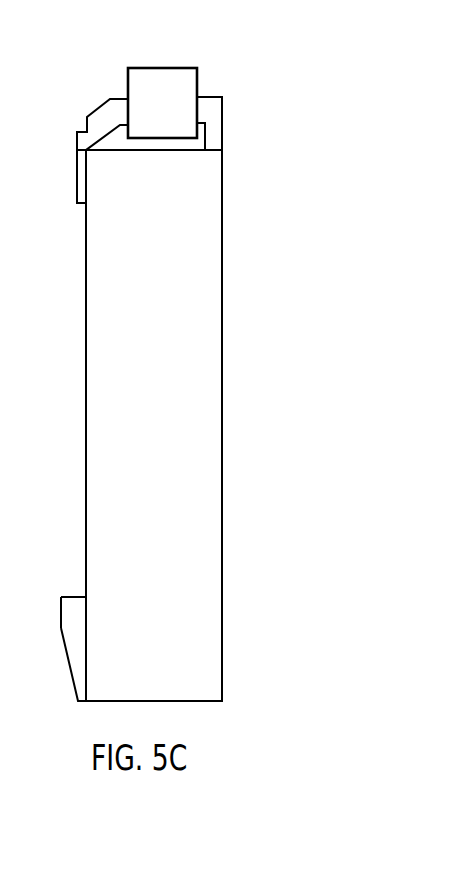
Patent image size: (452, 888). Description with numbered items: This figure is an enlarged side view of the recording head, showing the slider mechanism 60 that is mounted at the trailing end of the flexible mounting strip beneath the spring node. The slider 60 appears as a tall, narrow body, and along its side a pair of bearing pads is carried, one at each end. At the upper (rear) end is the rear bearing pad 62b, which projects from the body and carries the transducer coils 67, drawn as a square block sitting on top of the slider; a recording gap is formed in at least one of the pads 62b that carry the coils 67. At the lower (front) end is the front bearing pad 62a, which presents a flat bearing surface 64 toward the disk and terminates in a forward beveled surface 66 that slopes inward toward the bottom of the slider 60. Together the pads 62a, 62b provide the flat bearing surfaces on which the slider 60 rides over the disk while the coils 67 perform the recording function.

The slider mechanism 60 is at (222, 322).
The transducer coils 67 is at (162, 67).
The rear bearing pad 62b is at (82, 205).
The front bearing pad 62a is at (74, 593).
The flat bearing surface 64 is at (60, 615).
The forward beveled surface 66 is at (65, 657).